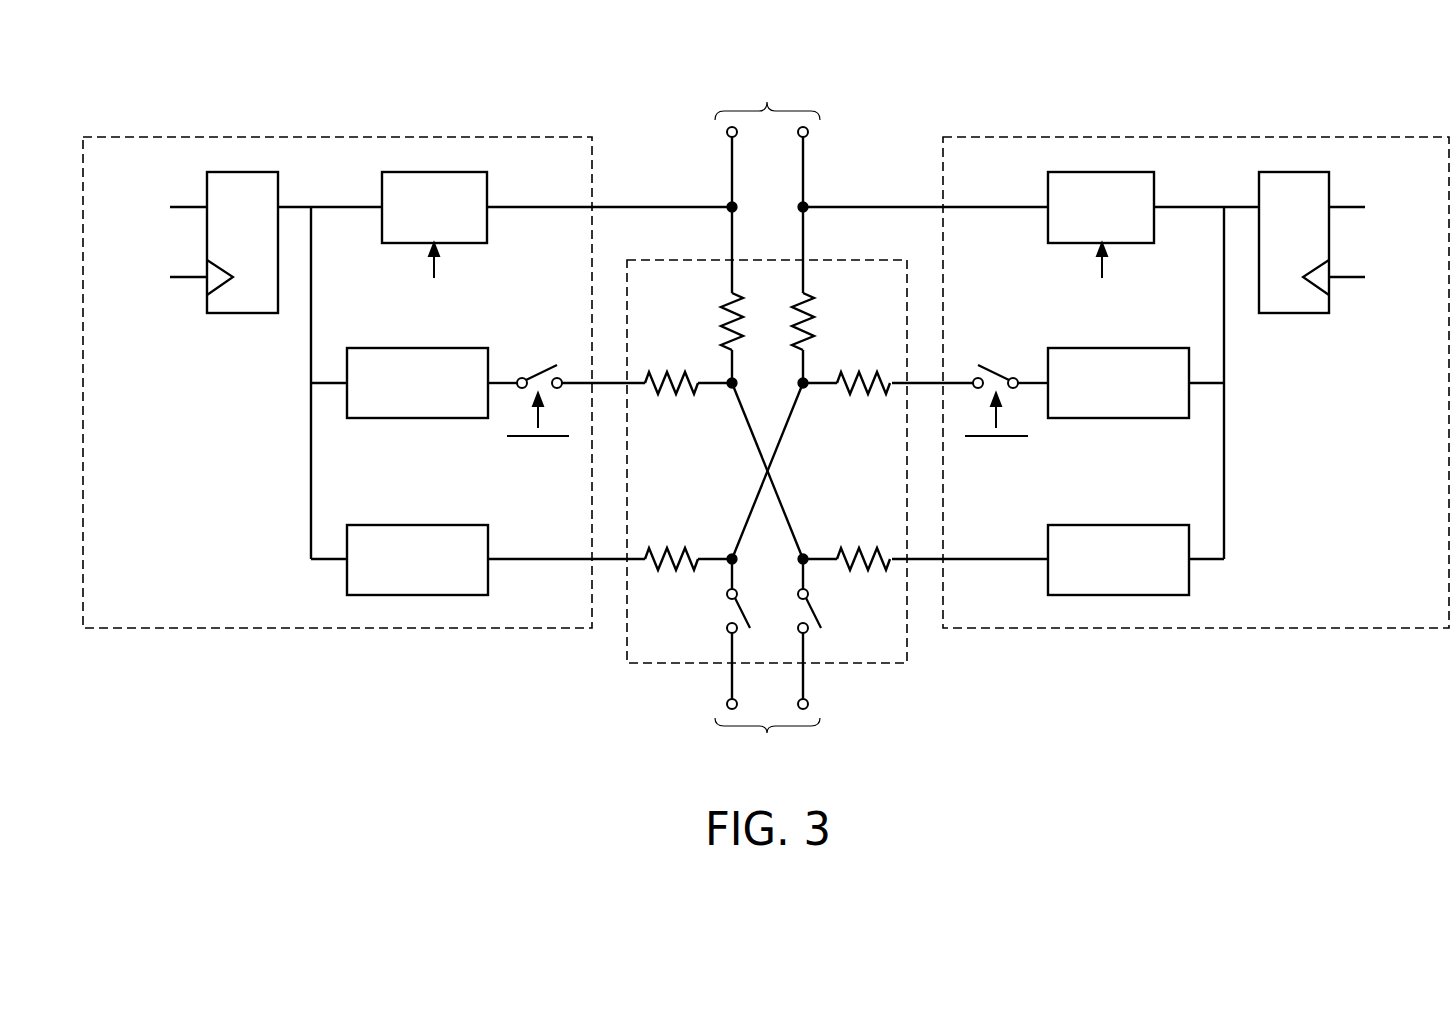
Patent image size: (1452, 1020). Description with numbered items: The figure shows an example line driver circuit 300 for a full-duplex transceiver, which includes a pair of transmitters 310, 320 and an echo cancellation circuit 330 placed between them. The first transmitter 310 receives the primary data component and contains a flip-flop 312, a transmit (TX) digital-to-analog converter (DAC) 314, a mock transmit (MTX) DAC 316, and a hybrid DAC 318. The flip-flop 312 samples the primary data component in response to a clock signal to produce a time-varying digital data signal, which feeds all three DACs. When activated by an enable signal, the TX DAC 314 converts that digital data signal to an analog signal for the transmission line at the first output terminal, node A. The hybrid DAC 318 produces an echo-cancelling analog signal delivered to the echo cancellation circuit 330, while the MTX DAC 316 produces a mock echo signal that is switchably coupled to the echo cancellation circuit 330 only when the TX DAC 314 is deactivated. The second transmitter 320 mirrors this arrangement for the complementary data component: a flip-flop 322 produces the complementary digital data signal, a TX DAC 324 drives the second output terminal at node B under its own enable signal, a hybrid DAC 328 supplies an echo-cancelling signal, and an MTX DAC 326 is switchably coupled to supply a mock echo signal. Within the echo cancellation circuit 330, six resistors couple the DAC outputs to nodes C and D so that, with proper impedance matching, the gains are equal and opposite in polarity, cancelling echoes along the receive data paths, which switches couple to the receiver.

The line driver circuit 300 is at (1347, 87).
The first transmitter 310 is at (178, 479).
The flip-flop 312 is at (224, 256).
The transmit (TX) digital-to-analog converter (DAC) 314 is at (415, 231).
The mock transmit (MTX) DAC 316 is at (398, 409).
The hybrid DAC 318 is at (398, 586).
The second transmitter 320 is at (1319, 479).
The flip-flop 322 is at (1275, 256).
The TX DAC 324 is at (1082, 231).
The MTX DAC 326 is at (1099, 409).
The hybrid DAC 328 is at (1099, 586).
The echo cancellation circuit 330 is at (652, 647).